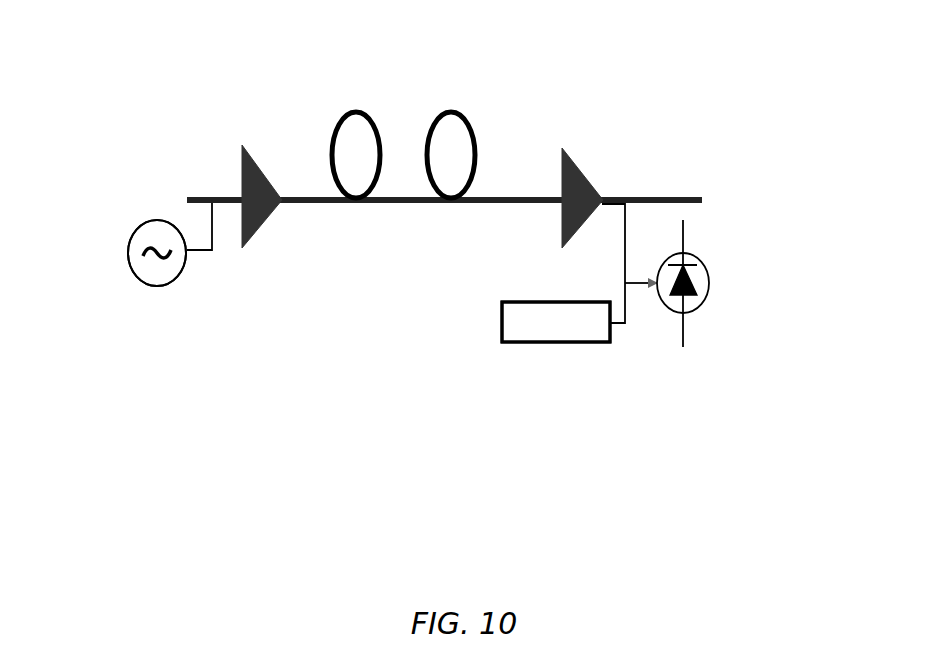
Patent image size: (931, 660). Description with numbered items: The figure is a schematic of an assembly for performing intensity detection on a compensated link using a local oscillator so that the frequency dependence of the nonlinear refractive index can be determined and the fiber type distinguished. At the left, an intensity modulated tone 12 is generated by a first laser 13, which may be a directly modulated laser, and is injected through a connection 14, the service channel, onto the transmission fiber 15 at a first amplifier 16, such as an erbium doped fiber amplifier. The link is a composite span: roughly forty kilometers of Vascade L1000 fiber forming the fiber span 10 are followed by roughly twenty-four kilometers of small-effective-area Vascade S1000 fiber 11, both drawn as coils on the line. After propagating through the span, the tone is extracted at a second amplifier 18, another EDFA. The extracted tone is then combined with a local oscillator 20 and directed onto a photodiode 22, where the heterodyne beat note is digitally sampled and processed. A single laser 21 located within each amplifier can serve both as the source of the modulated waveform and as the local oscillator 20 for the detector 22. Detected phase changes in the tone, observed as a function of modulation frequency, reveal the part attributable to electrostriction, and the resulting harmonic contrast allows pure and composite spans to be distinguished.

The fiber span 10 is at (360, 108).
The Vascade S1000 fiber 11 is at (457, 108).
The intensity modulated tone 12 is at (132, 225).
The first laser 13 is at (157, 253).
The service channel 14 is at (214, 260).
The traffic carrying channels 15 is at (195, 190).
The first amplifier 16 is at (237, 145).
The second amplifier 18 is at (568, 143).
The local oscillator 20 is at (565, 350).
The single laser 21 is at (556, 322).
The photodiode 22 is at (707, 310).